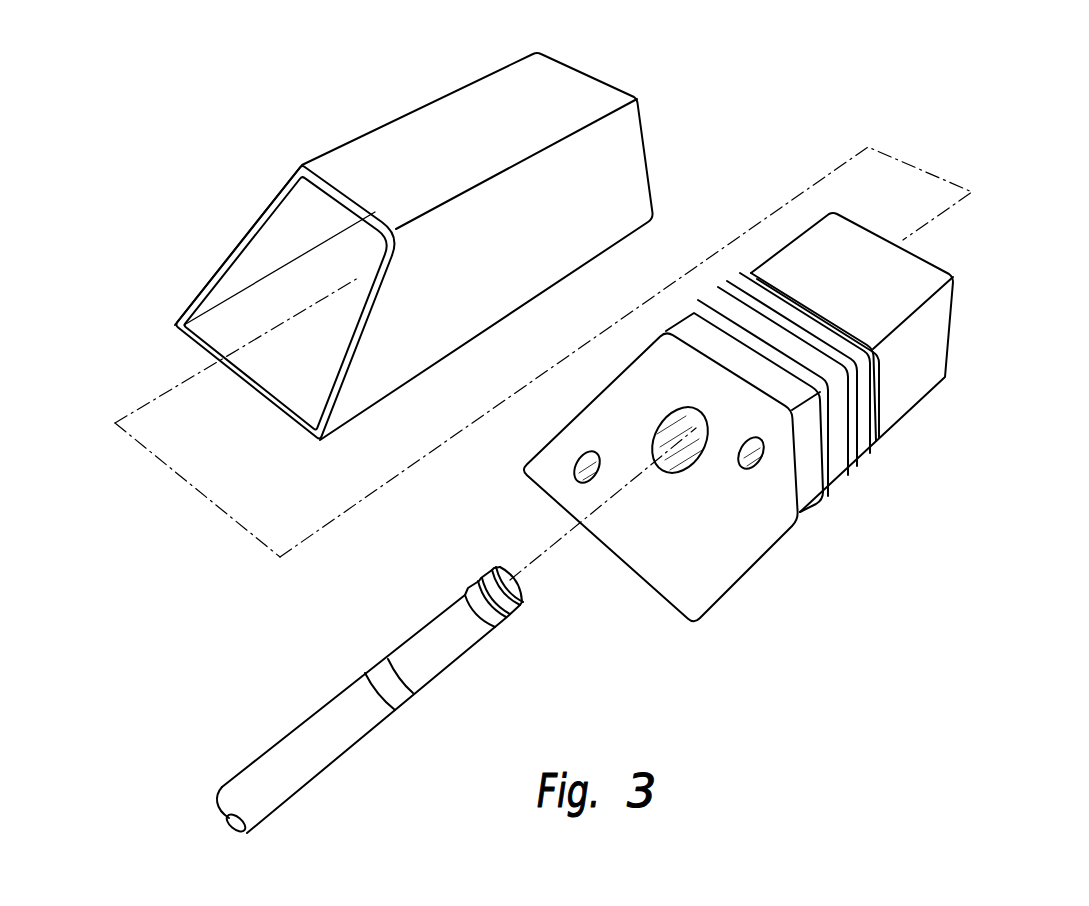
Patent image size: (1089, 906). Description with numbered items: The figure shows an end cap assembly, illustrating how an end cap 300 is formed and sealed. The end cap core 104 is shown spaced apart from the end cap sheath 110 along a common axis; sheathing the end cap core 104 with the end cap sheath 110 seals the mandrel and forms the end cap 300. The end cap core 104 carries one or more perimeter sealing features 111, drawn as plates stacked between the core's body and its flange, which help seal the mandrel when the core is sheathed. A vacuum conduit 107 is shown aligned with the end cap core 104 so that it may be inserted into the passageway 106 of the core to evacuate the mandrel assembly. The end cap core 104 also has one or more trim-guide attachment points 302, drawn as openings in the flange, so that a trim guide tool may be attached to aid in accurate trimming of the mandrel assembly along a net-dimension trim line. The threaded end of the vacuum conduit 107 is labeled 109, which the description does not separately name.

The end cap 300 is at (160, 110).
The end cap sheath 110 is at (401, 130).
The passageway 106 is at (673, 462).
The trim-guide attachment points 302 is at (747, 447).
The perimeter sealing features 111 is at (807, 502).
The end cap core 104 is at (923, 265).
The vacuum conduit 107 is at (317, 757).
The threaded connector end 109 is at (494, 626).